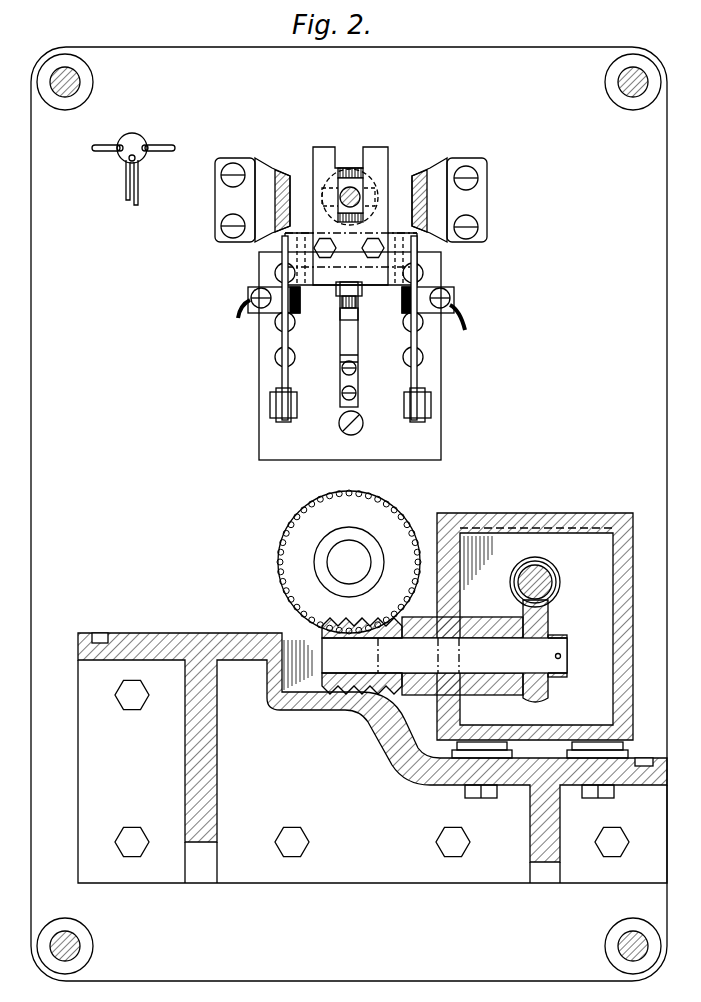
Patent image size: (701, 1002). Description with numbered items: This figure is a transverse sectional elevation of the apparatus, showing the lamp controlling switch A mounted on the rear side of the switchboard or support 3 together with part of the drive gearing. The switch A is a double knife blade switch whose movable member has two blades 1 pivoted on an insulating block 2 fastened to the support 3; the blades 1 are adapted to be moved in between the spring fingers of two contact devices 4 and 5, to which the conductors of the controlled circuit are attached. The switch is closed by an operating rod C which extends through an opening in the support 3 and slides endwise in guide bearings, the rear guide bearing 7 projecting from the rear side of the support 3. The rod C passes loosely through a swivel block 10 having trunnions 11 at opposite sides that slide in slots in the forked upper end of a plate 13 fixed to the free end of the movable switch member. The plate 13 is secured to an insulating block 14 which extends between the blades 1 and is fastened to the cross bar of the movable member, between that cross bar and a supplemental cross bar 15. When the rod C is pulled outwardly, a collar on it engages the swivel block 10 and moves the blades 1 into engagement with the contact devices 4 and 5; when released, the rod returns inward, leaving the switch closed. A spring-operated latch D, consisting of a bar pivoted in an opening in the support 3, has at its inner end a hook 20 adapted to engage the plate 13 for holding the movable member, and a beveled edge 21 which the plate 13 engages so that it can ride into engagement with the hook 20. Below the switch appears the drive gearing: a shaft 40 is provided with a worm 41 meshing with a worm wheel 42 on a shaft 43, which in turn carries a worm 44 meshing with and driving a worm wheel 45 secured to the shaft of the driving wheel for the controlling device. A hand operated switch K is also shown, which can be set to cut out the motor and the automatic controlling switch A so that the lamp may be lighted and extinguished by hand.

The blades 1 is at (282, 339).
The insulating block 2 is at (350, 356).
The support 3 is at (349, 514).
The contact device 4 is at (280, 287).
The contact device 5 is at (425, 293).
The guide bearing 7 is at (283, 172).
The swivel block 10 is at (347, 172).
The trunnions 11 is at (392, 211).
The plate 13 is at (351, 259).
The insulating block 14 is at (413, 243).
The supplemental cross bar 15 is at (358, 298).
The hook 20 is at (354, 287).
The beveled edge 21 is at (356, 302).
The shaft 40 is at (538, 568).
The worm 41 is at (557, 593).
The worm wheel 42 is at (549, 689).
The shaft 43 is at (444, 656).
The worm 44 is at (325, 630).
The worm wheel 45 is at (349, 562).
The lamp controlling switch A is at (418, 385).
The operating rod C is at (356, 190).
The spring-operated latch D is at (340, 302).
The hand operated switch K is at (136, 139).